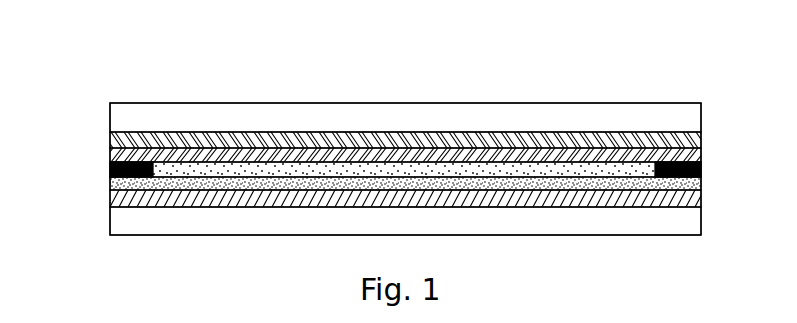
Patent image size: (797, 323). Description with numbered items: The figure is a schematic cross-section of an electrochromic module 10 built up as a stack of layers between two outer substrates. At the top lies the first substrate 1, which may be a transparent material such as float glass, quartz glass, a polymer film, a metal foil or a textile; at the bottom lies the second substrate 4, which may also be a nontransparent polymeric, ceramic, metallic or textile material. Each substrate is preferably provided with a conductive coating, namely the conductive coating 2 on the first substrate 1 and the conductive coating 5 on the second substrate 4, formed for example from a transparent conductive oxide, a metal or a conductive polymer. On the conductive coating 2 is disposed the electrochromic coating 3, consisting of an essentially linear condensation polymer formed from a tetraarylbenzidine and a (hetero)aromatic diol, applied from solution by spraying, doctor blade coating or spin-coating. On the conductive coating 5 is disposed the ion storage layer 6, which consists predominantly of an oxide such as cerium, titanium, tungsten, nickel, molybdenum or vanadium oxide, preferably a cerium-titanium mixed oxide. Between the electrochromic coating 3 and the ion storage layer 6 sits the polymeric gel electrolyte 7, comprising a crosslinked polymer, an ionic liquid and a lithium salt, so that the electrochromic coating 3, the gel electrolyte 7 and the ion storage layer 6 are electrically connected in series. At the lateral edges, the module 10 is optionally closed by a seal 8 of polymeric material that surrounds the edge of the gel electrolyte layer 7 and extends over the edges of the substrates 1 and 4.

The electrochromic module 10 is at (420, 70).
The first substrate 1 is at (110, 118).
The conductive coating 2 is at (110, 138).
The electrochromic coating 3 is at (110, 155).
The second substrate 4 is at (110, 222).
The conductive coating 5 is at (110, 197).
The ion storage layer 6 is at (110, 184).
The polymeric gel electrolyte 7 is at (255, 170).
The seal 8 is at (703, 168).